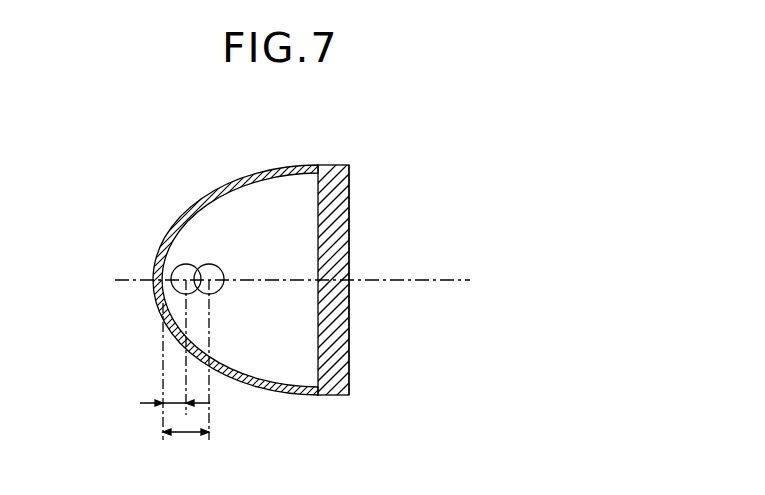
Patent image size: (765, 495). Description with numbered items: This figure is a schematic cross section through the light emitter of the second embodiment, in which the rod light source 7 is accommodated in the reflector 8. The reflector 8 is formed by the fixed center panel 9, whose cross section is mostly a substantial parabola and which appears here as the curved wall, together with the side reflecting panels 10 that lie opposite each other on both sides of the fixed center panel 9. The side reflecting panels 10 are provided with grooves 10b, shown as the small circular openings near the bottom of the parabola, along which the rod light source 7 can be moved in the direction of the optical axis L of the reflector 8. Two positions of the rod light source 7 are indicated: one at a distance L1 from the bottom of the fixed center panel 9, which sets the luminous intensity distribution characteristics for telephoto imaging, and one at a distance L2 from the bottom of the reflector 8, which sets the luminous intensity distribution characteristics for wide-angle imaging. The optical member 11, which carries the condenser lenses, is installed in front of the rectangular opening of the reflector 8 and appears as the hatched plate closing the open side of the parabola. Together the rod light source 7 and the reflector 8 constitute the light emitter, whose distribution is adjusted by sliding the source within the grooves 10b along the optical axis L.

The rod light source 7 is at (200, 277).
The reflector 8 is at (128, 245).
The fixed center panel 9 is at (180, 215).
The side reflecting panels 10 is at (303, 238).
The grooves 10b is at (190, 269).
The optical member 11 is at (349, 342).
The optical axis L is at (432, 278).
The distance L1 is at (170, 405).
The distance L2 is at (190, 433).